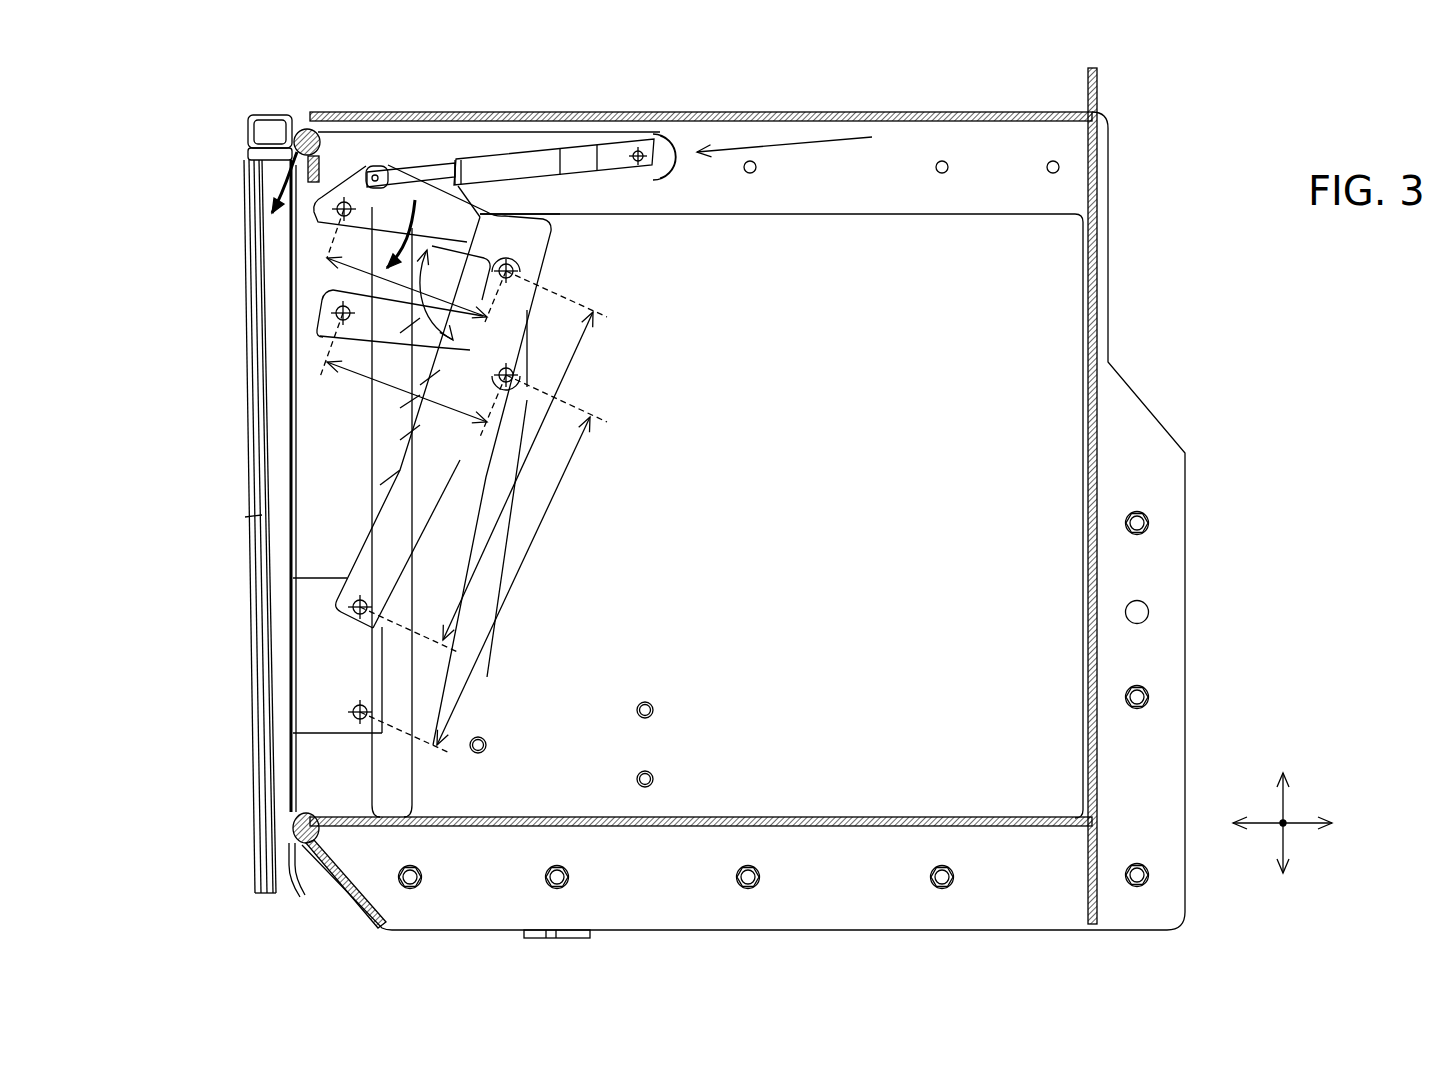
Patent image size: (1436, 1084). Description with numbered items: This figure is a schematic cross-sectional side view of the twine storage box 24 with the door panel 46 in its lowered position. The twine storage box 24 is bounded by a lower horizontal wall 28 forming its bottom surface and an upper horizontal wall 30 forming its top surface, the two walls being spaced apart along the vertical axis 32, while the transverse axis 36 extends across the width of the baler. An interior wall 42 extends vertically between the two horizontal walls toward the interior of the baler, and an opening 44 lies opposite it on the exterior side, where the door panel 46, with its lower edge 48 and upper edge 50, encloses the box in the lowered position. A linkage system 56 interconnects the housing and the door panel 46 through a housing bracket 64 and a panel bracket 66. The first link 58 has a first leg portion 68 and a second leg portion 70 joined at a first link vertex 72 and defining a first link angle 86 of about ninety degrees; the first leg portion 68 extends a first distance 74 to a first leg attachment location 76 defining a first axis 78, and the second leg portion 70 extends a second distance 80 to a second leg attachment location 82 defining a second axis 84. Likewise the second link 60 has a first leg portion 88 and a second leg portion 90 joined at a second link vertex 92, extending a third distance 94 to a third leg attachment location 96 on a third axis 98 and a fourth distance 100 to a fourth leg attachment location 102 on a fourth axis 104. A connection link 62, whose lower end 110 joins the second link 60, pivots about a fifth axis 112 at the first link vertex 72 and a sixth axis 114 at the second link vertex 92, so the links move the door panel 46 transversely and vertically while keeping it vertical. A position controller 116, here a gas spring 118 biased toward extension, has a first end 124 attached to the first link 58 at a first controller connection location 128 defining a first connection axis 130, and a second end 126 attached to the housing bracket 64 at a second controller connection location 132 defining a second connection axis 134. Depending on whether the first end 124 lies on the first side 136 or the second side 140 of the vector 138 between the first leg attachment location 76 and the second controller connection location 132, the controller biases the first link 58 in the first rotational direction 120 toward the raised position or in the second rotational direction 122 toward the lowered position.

The twine storage box 24 is at (932, 112).
The lower horizontal wall 28 is at (837, 826).
The upper horizontal wall 30 is at (813, 112).
The vertical axis 32 is at (1280, 802).
The transverse axis 36 is at (1305, 815).
The interior wall 42 is at (1097, 338).
The opening 44 is at (307, 772).
The door panel 46 is at (227, 362).
The lower edge 48 is at (285, 890).
The upper edge 50 is at (266, 112).
The linkage system 56 is at (482, 515).
The first link 58 is at (380, 485).
The second link 60 is at (400, 527).
The connection link 62 is at (613, 320).
The housing bracket 64 is at (462, 148).
The panel bracket 66 is at (337, 678).
The first leg portion 68 is at (453, 165).
The second leg portion 70 is at (262, 515).
The first link vertex 72 is at (556, 232).
The first distance 74 is at (338, 279).
The first leg attachment location 76 is at (296, 148).
The first axis 78 is at (322, 233).
The second distance 80 is at (523, 462).
The second leg attachment location 82 is at (363, 633).
The second axis 84 is at (358, 596).
The first link angle 86 is at (420, 385).
The first leg portion 88 is at (400, 408).
The second leg portion 90 is at (545, 470).
The second link vertex 92 is at (525, 377).
The third distance 94 is at (400, 440).
The third leg attachment location 96 is at (340, 292).
The third axis 98 is at (400, 333).
The fourth distance 100 is at (550, 508).
The fourth leg attachment location 102 is at (357, 700).
The fourth axis 104 is at (345, 725).
The lower end 110 is at (610, 420).
The fifth axis 112 is at (560, 216).
The sixth axis 114 is at (535, 325).
The position controller 116 is at (522, 147).
The gas spring 118 is at (560, 160).
The first rotational direction 120 is at (415, 198).
The second rotational direction 122 is at (275, 182).
The first end 124 is at (453, 222).
The second end 126 is at (597, 160).
The first controller connection location 128 is at (303, 128).
The first connection axis 130 is at (347, 202).
The second controller connection location 132 is at (638, 150).
The second connection axis 134 is at (680, 137).
The first side 136 is at (773, 137).
The vector 138 is at (835, 140).
The second side 140 is at (793, 206).